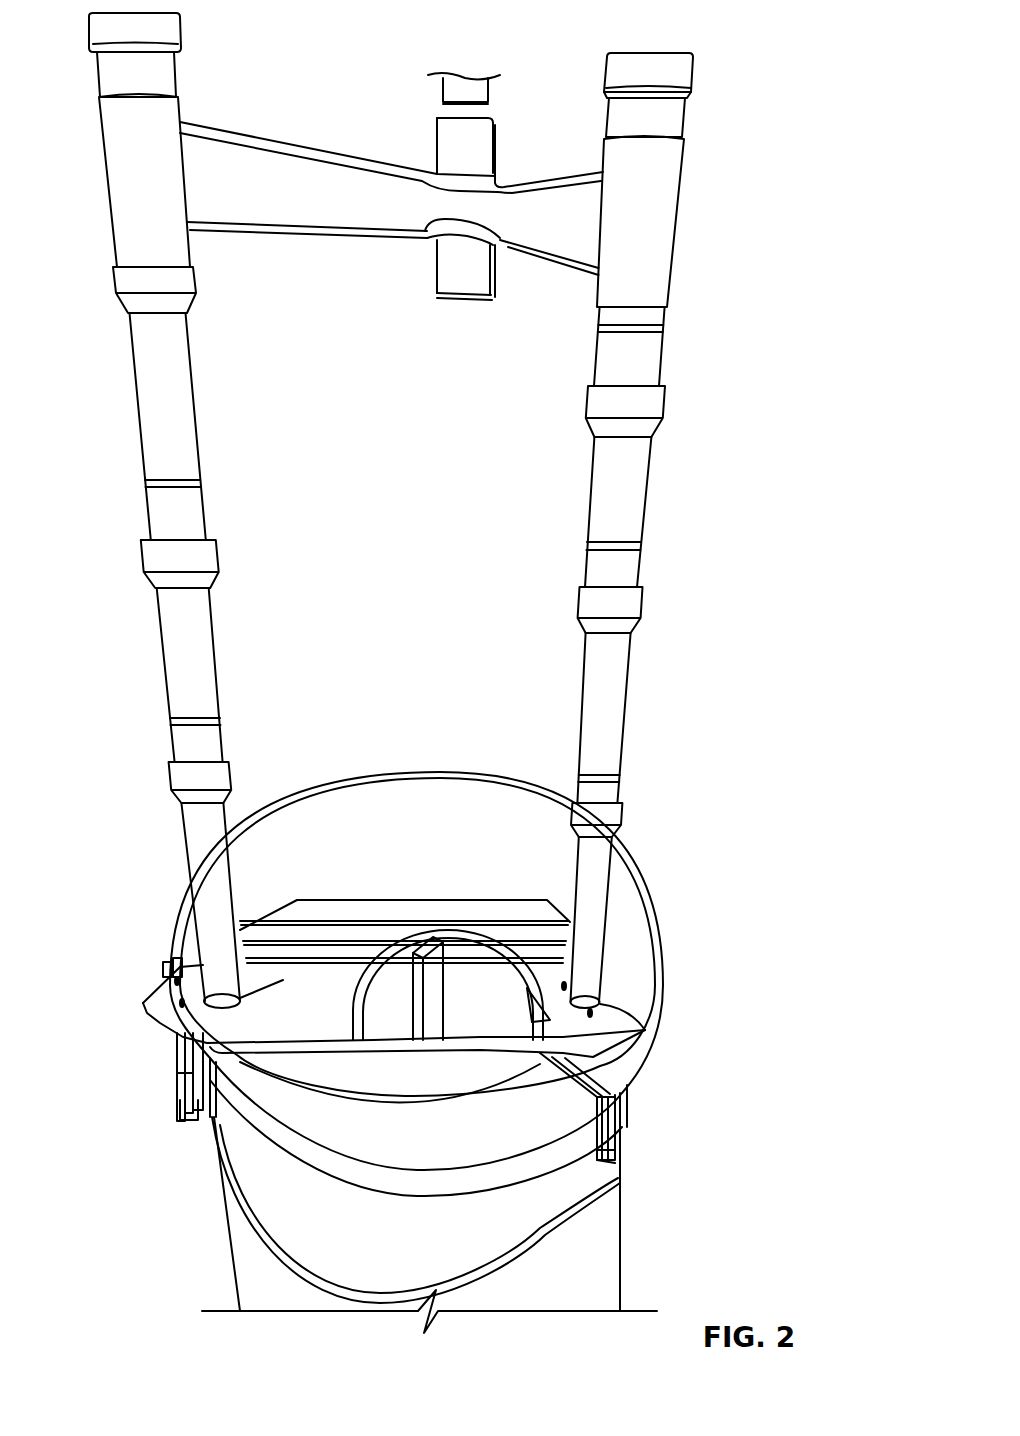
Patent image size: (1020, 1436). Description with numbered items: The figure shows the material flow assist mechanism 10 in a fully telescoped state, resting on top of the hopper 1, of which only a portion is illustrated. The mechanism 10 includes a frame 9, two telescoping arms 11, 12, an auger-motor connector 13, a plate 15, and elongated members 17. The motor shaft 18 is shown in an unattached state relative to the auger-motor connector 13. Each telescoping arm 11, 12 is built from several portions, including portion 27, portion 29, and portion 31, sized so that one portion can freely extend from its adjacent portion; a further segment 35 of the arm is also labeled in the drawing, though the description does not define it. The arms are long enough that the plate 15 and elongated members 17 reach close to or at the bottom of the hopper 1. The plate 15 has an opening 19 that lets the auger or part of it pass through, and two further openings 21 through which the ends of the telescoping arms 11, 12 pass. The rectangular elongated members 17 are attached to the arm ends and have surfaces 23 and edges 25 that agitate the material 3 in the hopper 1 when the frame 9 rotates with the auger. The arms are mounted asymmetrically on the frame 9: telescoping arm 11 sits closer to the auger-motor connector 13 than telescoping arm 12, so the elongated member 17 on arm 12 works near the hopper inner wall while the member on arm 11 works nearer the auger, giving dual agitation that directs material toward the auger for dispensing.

The hopper 1 is at (454, 1052).
The material 3 is at (405, 975).
The frame 9 is at (391, 258).
The material flow assist mechanism 10 is at (631, 527).
The telescoping arm 11 is at (617, 277).
The telescoping arm 12 is at (230, 507).
The auger-motor connector 13 is at (459, 323).
The plate 15 is at (148, 992).
The elongated members 17 is at (172, 1089).
The motor shaft 18 is at (440, 84).
The opening 19 is at (452, 963).
The openings 21 is at (240, 995).
The surfaces 23 is at (173, 1058).
The edges 25 is at (172, 1112).
The portion 27 is at (612, 892).
The portion 29 is at (625, 703).
The portion 31 is at (650, 489).
The upper tube section 35 is at (652, 355).